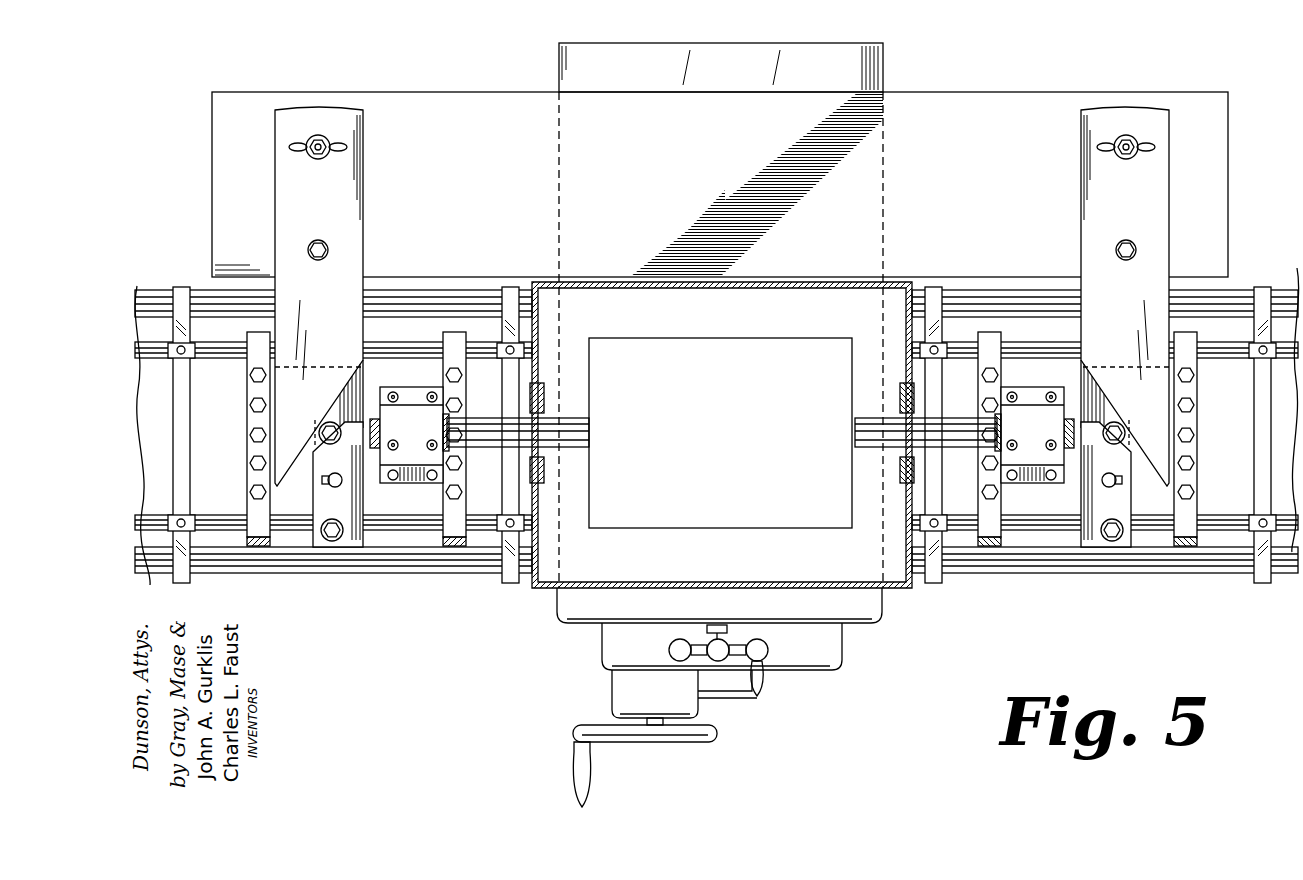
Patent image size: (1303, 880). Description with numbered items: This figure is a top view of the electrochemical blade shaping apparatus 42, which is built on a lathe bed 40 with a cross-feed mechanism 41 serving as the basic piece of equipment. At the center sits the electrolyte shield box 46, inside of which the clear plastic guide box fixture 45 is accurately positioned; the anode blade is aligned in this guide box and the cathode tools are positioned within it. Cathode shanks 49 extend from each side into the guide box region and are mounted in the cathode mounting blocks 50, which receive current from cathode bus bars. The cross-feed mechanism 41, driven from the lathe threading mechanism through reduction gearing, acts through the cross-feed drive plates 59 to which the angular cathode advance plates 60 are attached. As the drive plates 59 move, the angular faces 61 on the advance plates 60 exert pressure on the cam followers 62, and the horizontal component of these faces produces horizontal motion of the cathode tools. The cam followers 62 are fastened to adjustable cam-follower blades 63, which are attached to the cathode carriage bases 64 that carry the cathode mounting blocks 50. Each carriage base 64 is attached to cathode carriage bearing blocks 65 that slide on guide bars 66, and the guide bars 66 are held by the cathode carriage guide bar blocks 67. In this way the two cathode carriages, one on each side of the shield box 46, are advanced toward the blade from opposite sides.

The lathe bed 40 is at (1072, 545).
The cross-feed mechanism 41 is at (795, 665).
The electrochemical blade shaping apparatus 42 is at (898, 590).
The guide box fixture 45 is at (803, 337).
The electrolyte shield box 46 is at (540, 590).
The cathode shanks 49 is at (575, 418).
The cathode mounting blocks 50 is at (410, 342).
The cross-feed drive plates 59 is at (476, 132).
The cathode advance plates 60 is at (309, 197).
The angular faces 61 is at (350, 398).
The cam followers 62 is at (298, 540).
The adjustable cam-follower blades 63 is at (352, 540).
The cathode carriage bases 64 is at (388, 345).
The cathode carriage bearing blocks 65 is at (455, 333).
The guide bars 66 is at (427, 342).
The cathode carriage guide bar blocks 67 is at (193, 433).